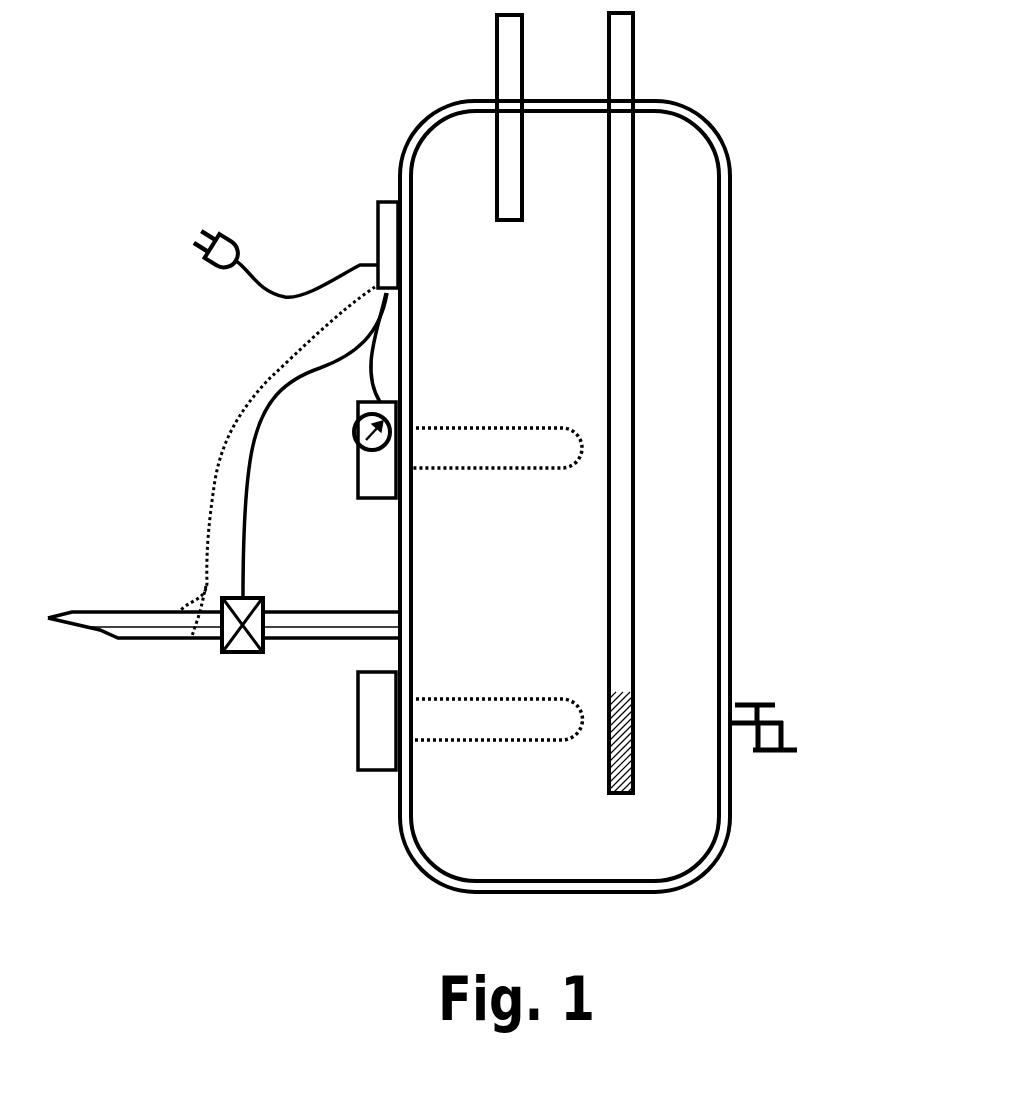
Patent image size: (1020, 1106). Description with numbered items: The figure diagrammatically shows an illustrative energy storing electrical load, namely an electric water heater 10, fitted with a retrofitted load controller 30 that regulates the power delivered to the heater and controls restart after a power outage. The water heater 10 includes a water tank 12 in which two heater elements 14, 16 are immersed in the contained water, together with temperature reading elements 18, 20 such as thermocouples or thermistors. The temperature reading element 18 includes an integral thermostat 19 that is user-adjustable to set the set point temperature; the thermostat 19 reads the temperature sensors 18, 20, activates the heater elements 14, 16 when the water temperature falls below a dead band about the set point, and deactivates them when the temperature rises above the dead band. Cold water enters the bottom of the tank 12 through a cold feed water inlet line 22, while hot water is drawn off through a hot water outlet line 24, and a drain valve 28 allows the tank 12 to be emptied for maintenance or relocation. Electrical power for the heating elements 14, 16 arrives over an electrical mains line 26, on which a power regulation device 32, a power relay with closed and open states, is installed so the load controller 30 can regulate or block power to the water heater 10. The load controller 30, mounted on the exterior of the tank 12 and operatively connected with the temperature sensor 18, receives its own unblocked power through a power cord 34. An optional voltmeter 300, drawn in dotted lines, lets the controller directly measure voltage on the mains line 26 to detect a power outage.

The electric water heater 10 is at (818, 248).
The water tank 12 is at (723, 463).
The heater element 14 is at (477, 426).
The heater element 16 is at (476, 697).
The temperature reading element 18 is at (357, 476).
The thermostat 19 is at (358, 428).
The temperature reading element 20 is at (357, 722).
The cold feed water inlet line 22 is at (622, 52).
The hot water outlet line 24 is at (505, 56).
The electrical mains line 26 is at (158, 610).
The drain valve 28 is at (778, 720).
The load controller 30 is at (376, 233).
The power regulation device 32 is at (262, 600).
The power cord 34 is at (253, 268).
The voltmeter 300 is at (190, 583).